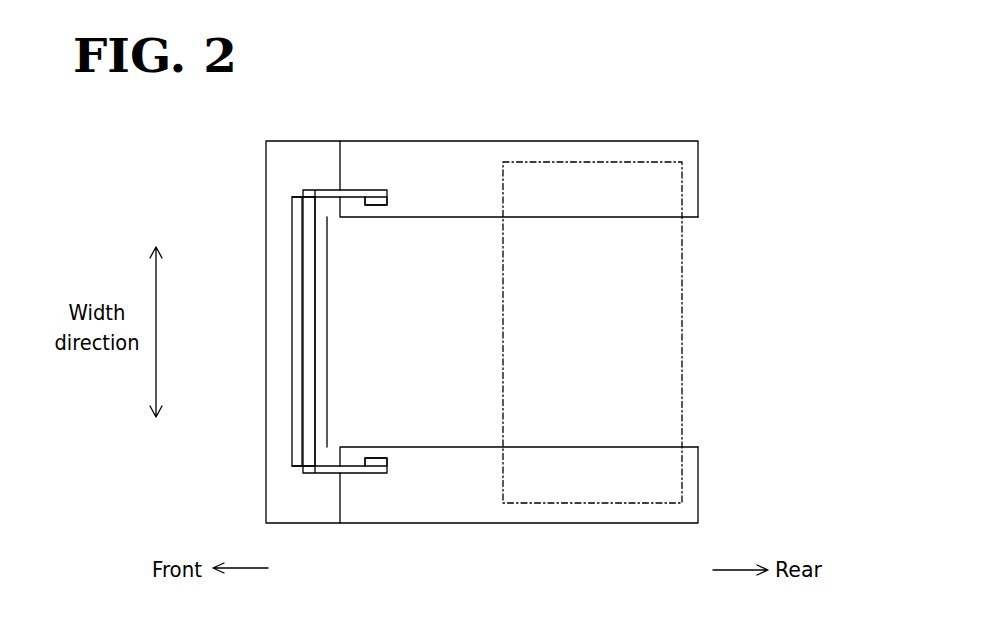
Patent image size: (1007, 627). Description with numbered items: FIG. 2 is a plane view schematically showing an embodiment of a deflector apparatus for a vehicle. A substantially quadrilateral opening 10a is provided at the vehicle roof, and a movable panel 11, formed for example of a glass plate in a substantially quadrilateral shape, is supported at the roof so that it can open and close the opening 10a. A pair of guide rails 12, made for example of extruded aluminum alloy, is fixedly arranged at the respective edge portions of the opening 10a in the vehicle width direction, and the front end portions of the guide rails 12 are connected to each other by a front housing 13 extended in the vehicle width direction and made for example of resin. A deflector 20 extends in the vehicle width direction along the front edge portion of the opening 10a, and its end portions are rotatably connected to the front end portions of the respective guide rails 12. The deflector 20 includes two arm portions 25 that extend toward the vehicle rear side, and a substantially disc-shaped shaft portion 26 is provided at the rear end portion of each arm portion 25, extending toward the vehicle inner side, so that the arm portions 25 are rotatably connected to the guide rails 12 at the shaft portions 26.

The opening 10a is at (462, 340).
The movable panel 11 is at (684, 333).
The guide rails 12 is at (443, 141).
The front housing 13 is at (265, 331).
The deflector 20 is at (292, 260).
The arm portions 25 is at (325, 189).
The shaft portion 26 is at (375, 206).